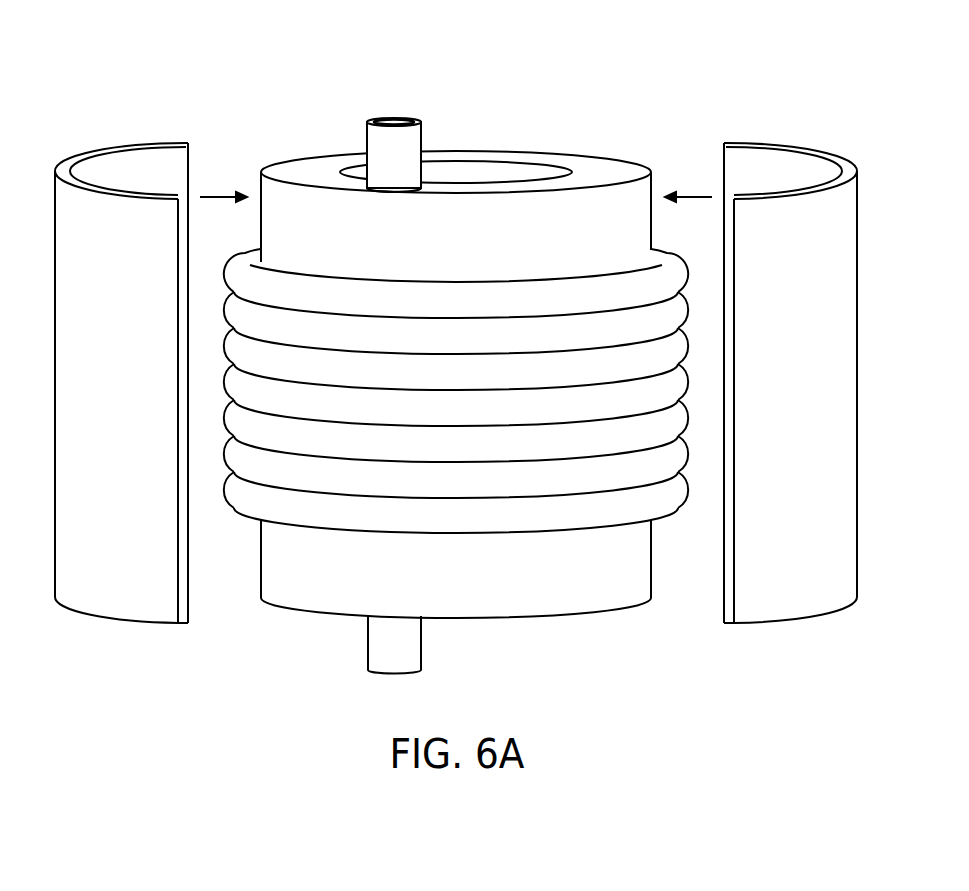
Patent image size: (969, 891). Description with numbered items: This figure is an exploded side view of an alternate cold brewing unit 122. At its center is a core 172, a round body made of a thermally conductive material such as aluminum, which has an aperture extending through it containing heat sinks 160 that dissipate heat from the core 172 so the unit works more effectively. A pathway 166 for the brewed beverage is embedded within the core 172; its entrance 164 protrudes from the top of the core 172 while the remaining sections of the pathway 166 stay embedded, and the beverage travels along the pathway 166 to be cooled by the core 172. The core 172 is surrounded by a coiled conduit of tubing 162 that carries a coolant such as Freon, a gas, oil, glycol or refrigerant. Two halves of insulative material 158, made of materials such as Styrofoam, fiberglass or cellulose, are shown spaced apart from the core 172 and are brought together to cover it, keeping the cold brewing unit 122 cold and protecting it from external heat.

The cold brewing unit 122 is at (636, 71).
The insulative material 158 is at (113, 148).
The heat sink 160 is at (470, 178).
The tubing 162 is at (241, 500).
The entrance 164 is at (383, 120).
The pathway 166 is at (388, 660).
The core 172 is at (302, 165).